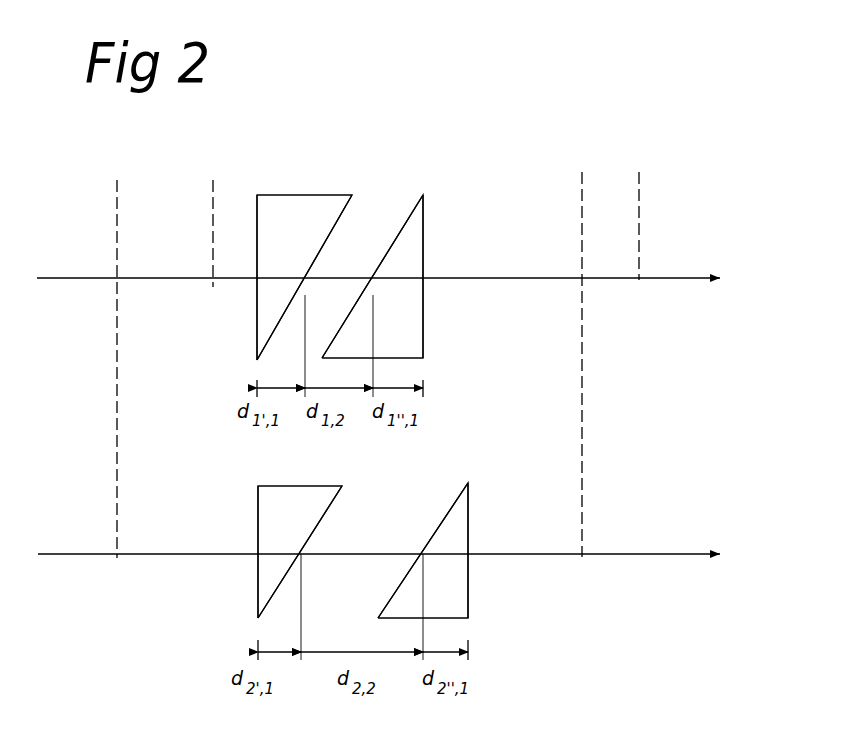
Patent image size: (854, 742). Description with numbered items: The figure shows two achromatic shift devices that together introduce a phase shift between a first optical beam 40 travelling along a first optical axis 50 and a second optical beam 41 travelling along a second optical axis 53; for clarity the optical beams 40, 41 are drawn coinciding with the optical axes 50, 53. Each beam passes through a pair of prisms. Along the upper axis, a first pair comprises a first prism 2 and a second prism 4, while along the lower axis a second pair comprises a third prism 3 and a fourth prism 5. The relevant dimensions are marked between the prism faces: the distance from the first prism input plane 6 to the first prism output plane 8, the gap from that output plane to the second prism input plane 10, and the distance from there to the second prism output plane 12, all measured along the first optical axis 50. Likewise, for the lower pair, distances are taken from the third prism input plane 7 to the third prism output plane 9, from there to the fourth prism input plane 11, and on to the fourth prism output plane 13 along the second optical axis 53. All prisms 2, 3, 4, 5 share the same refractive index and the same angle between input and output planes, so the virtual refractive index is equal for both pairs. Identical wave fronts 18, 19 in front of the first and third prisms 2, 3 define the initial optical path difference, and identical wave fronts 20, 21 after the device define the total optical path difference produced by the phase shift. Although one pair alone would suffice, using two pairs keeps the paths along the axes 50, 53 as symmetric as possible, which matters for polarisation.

The first prism 2 is at (290, 202).
The third prism 3 is at (268, 575).
The second prism 4 is at (395, 262).
The fourth prism 5 is at (452, 605).
The first prism input plane 6 is at (257, 205).
The third prism input plane 7 is at (258, 618).
The first prism output plane 8 is at (347, 205).
The third prism output plane 9 is at (332, 498).
The second prism input plane 10 is at (417, 207).
The fourth prism input plane 11 is at (452, 505).
The second prism output plane 12 is at (425, 237).
The fourth prism output plane 13 is at (470, 515).
The wave front 18 is at (116, 185).
The wave front 19 is at (212, 186).
The wave front 20 is at (580, 200).
The wave front 21 is at (641, 198).
The first optical beam 40 is at (84, 279).
The second optical beam 41 is at (74, 554).
The first optical axis 50 is at (670, 277).
The second optical axis 53 is at (640, 553).